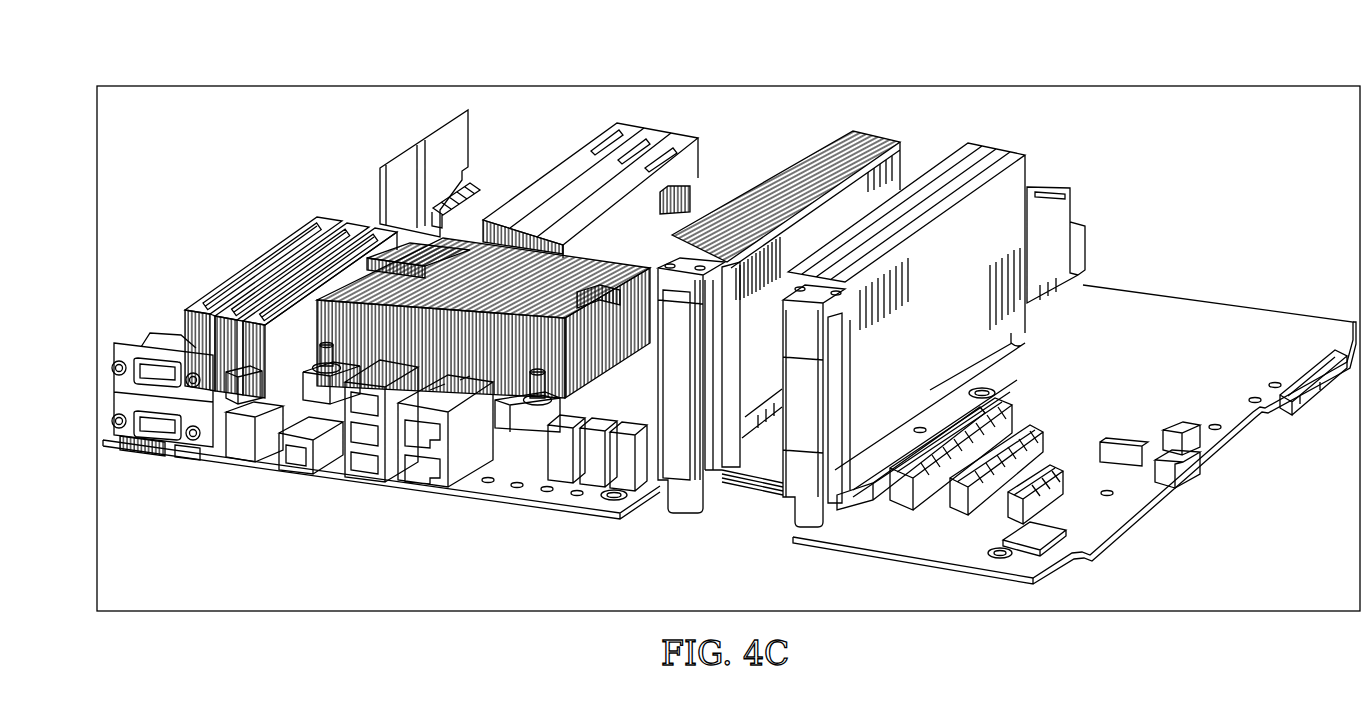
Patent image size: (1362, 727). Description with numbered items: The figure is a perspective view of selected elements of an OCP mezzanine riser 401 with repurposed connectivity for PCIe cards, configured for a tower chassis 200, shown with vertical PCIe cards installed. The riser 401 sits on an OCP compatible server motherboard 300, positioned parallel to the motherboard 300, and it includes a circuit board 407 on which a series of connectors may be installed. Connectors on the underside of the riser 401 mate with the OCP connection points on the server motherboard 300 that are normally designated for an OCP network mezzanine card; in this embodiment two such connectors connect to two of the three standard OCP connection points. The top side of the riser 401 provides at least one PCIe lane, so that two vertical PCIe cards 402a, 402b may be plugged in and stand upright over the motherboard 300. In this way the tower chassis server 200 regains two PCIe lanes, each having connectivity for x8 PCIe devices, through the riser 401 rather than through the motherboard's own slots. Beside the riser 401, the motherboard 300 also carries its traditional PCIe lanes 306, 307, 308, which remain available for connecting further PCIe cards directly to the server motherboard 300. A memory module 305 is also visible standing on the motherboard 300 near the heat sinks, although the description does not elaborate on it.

The tower chassis 200 is at (378, 72).
The server motherboard 300 is at (1133, 502).
The memory module 305 is at (467, 242).
The PCIe lane 306 is at (1056, 470).
The PCIe lane 307 is at (1026, 437).
The PCIe lane 308 is at (1000, 407).
The OCP mezzanine riser 401 is at (880, 467).
The vertical PCIe card 402a is at (1002, 160).
The vertical PCIe card 402b is at (877, 142).
The circuit board 407 is at (757, 477).